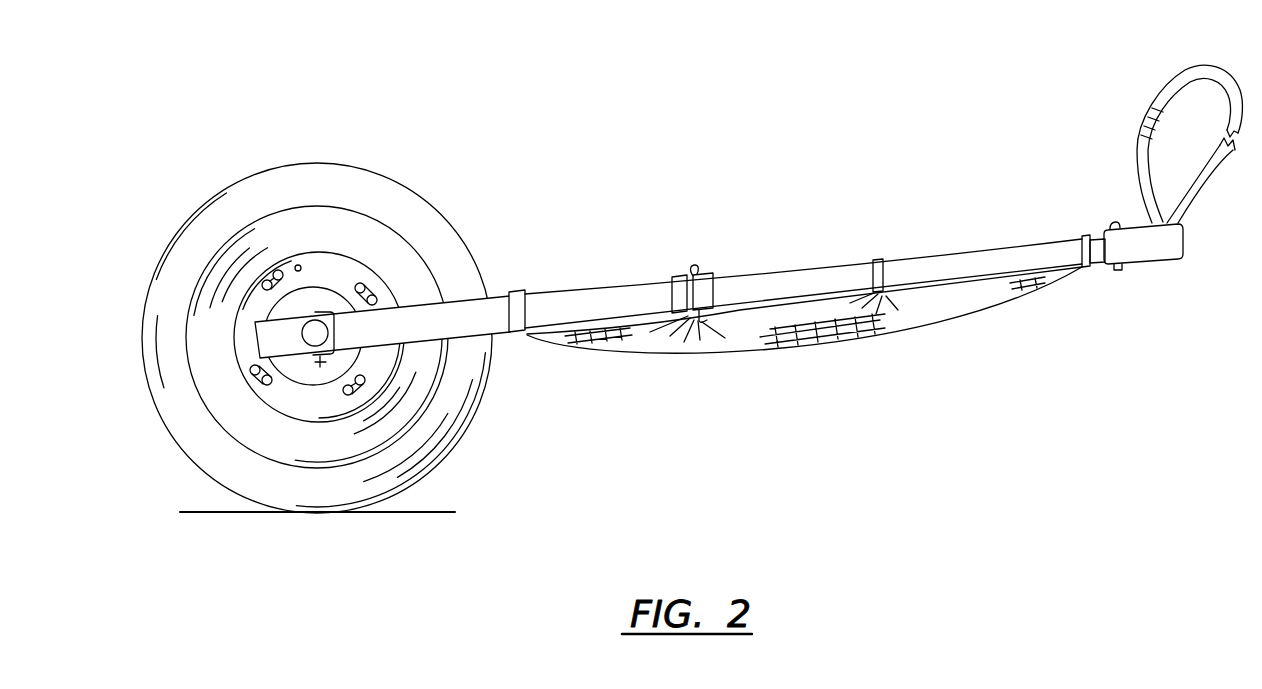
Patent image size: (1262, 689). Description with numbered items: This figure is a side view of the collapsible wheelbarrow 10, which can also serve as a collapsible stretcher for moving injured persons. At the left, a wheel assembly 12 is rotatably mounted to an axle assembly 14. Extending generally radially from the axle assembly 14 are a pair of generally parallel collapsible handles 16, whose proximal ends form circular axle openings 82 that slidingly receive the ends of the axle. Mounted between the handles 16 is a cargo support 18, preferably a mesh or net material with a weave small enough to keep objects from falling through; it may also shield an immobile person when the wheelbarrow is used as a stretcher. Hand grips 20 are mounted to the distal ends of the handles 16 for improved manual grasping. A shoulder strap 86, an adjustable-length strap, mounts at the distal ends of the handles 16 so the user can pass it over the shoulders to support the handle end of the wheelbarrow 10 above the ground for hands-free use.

The collapsible wheelbarrow 10 is at (512, 88).
The wheel assembly 12 is at (244, 176).
The axle assembly 14 is at (298, 352).
The collapsible handles 16 is at (606, 290).
The cargo support 18 is at (884, 344).
The hand grips 20 is at (1165, 262).
The circular axle openings 82 is at (308, 317).
The shoulder strap 86 is at (1176, 75).